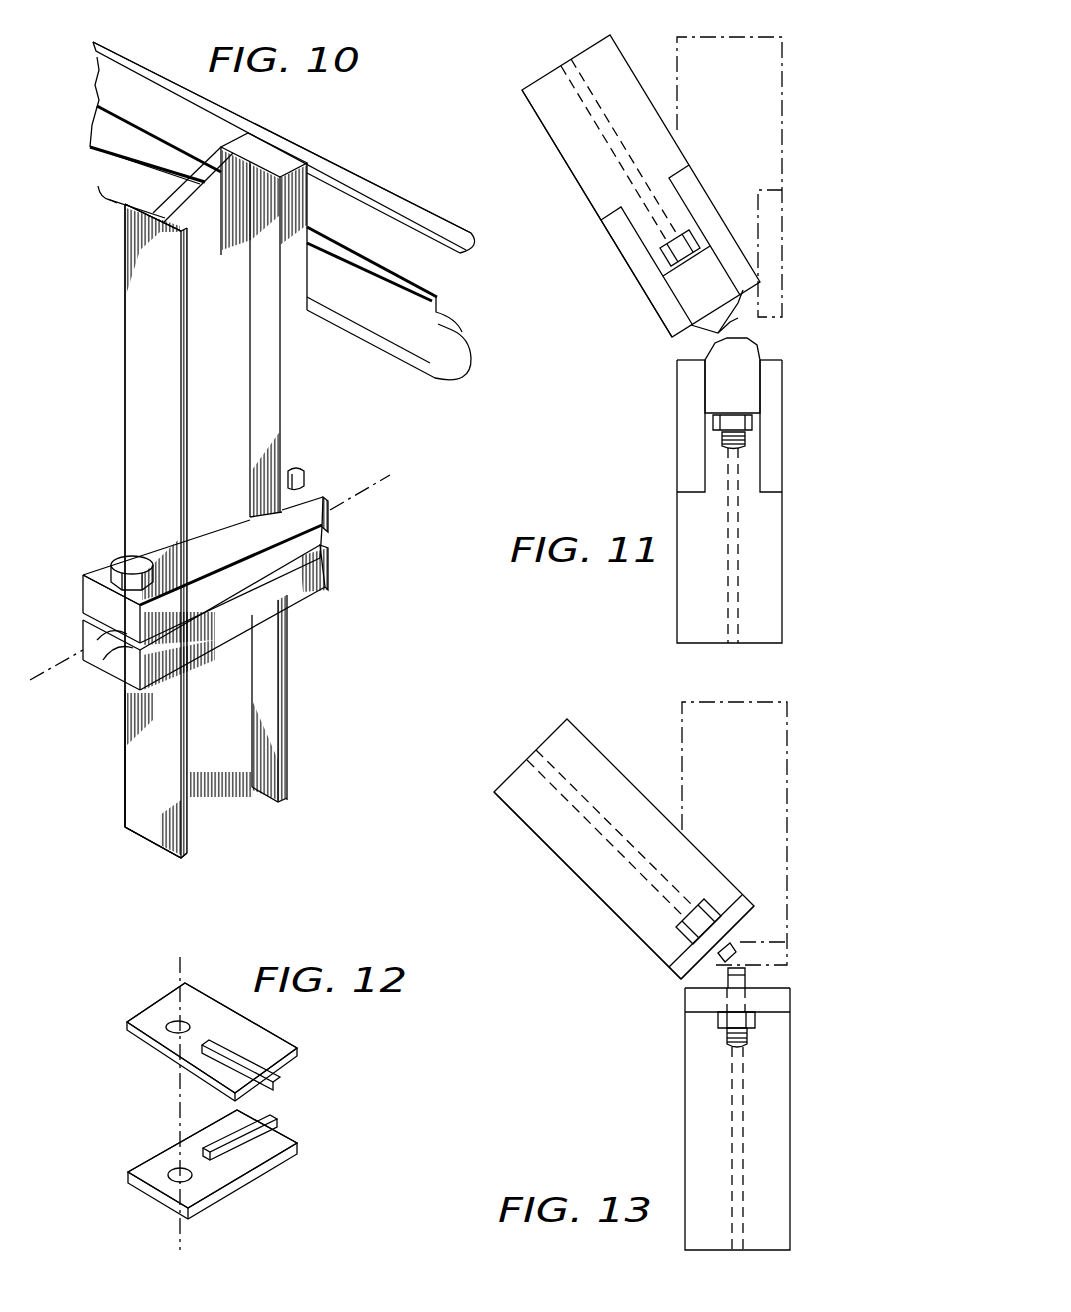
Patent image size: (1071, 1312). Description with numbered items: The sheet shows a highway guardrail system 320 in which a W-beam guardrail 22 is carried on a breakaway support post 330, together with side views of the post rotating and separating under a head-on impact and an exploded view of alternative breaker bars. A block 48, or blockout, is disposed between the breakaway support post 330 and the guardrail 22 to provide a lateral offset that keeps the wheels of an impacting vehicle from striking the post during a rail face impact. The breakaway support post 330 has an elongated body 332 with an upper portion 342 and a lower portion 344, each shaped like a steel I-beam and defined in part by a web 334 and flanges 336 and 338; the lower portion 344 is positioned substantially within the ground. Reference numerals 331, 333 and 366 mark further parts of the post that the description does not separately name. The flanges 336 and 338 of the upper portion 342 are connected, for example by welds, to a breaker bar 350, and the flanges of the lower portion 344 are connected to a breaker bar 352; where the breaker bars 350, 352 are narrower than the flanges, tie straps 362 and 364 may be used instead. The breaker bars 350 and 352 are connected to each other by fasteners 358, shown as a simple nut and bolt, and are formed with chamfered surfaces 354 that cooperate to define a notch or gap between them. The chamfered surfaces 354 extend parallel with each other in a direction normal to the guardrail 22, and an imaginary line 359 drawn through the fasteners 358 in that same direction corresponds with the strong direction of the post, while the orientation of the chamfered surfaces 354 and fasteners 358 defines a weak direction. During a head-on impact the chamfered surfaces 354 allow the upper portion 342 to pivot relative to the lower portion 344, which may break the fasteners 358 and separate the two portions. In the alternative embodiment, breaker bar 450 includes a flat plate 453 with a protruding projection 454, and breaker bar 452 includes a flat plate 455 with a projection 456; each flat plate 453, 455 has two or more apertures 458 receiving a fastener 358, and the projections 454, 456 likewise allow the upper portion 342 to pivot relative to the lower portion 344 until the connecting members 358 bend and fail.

In FIG. 10, the guardrail 22 is at (406, 194).
In FIG. 10, the block 48 is at (267, 147).
In FIG. 10, the highway guardrail system 320 is at (346, 141).
In FIG. 10, the breakaway support post 330 is at (110, 453).
In FIG. 10, the upper post section 331 is at (118, 234).
In FIG. 10, the elongated body 332 is at (305, 428).
In FIG. 10, the lower end of post 333 is at (177, 858).
In FIG. 10, the web 334 is at (190, 205).
In FIG. 11, the web 334 is at (568, 78).
In FIG. 13, the web 334 is at (550, 757).
In FIG. 10, the flange 336 is at (145, 387).
In FIG. 11, the flange 336 is at (548, 108).
In FIG. 10, the flange 338 is at (281, 371).
In FIG. 10, the upper portion 342 is at (128, 312).
In FIG. 11, the upper portion 342 is at (640, 83).
In FIG. 13, the upper portion 342 is at (600, 748).
In FIG. 10, the lower portion 344 is at (141, 828).
In FIG. 11, the lower portion 344 is at (787, 400).
In FIG. 13, the lower portion 344 is at (790, 1052).
In FIG. 10, the breaker bar 350 is at (329, 519).
In FIG. 11, the breaker bar 350 is at (690, 293).
In FIG. 10, the breaker bar 352 is at (329, 577).
In FIG. 11, the breaker bar 352 is at (743, 353).
In FIG. 10, the chamfered surfaces 354 is at (95, 622).
In FIG. 10, the fasteners 358 is at (302, 470).
In FIG. 11, the fasteners 358 is at (673, 250).
In FIG. 13, the fasteners 358 is at (698, 893).
In FIG. 10, the imaginary line 359 is at (388, 477).
In FIG. 11, the tie strap 362 is at (703, 203).
In FIG. 11, the tie strap 364 is at (775, 443).
In FIG. 13, the post face 366 is at (557, 842).
In FIG. 13, the breaker bar 450 is at (686, 970).
In FIG. 12, the breaker bar 450 is at (110, 1038).
In FIG. 13, the breaker bar 452 is at (778, 1000).
In FIG. 12, the breaker bar 452 is at (115, 1204).
In FIG. 12, the flat plate 453 is at (215, 1007).
In FIG. 13, the protruding member 454 is at (737, 956).
In FIG. 12, the protruding member 454 is at (272, 1083).
In FIG. 12, the flat plate 455 is at (260, 1170).
In FIG. 13, the protruding member 456 is at (747, 977).
In FIG. 12, the protruding member 456 is at (269, 1120).
In FIG. 12, the apertures 458 is at (173, 1030).